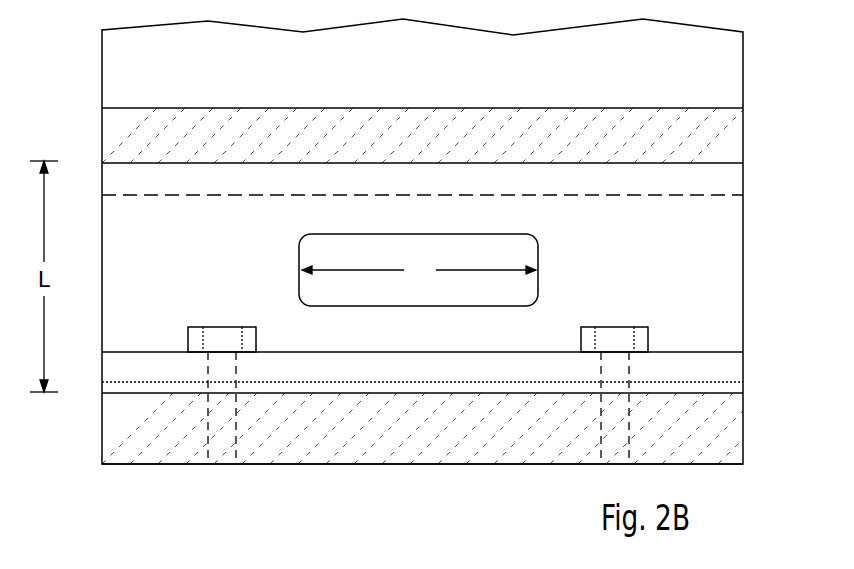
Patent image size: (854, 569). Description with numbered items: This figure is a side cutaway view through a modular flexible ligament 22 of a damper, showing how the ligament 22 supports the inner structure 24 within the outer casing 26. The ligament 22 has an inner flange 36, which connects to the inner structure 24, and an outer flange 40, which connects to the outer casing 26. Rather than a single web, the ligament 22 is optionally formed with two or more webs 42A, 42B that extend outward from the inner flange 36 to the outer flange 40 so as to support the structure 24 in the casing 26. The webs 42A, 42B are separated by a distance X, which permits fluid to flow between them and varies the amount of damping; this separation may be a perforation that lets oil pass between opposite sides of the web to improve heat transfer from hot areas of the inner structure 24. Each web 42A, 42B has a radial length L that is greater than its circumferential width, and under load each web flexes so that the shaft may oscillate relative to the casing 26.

The ligament 22 is at (712, 229).
The inner structure 24 is at (712, 135).
The outer casing 26 is at (712, 428).
The inner flange 36 is at (712, 182).
The outer flange 40 is at (712, 371).
The web 42A is at (712, 271).
The web 42B is at (143, 323).